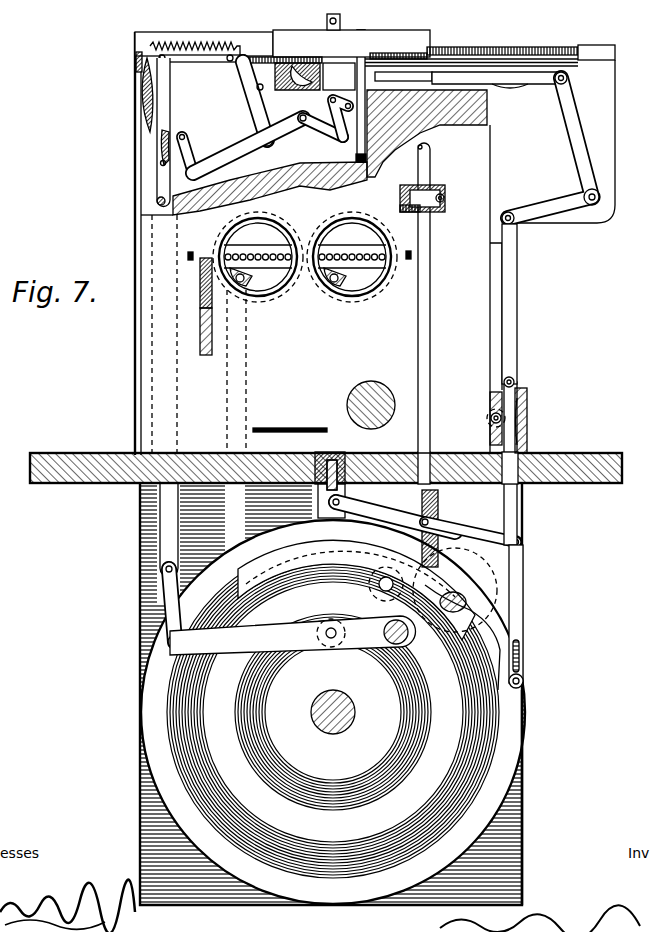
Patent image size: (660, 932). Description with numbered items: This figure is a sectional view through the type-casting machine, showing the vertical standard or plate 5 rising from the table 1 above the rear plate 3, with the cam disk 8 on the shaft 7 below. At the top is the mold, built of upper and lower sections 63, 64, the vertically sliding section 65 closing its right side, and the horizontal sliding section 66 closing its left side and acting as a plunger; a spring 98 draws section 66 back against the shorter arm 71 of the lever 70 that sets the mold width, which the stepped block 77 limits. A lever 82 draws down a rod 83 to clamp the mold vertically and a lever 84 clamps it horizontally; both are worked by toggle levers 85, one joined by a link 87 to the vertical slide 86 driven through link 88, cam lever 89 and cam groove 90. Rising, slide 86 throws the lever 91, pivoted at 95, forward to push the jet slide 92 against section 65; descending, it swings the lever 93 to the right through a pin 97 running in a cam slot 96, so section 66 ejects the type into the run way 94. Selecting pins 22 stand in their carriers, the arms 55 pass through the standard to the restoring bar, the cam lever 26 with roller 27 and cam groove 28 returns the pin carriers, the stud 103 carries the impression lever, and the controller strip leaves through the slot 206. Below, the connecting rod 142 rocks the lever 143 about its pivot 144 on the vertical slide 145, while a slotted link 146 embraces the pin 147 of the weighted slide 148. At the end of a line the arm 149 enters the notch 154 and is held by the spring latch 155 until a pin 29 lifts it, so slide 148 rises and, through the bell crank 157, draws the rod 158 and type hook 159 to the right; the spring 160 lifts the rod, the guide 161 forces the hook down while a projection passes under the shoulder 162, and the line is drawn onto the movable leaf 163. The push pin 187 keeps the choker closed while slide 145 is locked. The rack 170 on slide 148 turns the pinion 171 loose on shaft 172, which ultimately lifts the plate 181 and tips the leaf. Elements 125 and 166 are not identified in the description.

The table 1 is at (624, 468).
The rear plate 3 is at (526, 778).
The vertical standard or plate 5 is at (375, 243).
The shaft 7 is at (356, 710).
The cam disk 8 is at (155, 748).
The selecting pins 22 is at (255, 255).
The cam lever 26 is at (356, 590).
The roller 27 is at (393, 590).
The cam groove 28 is at (475, 720).
The pin 29 is at (438, 208).
The arms 55 is at (188, 256).
The upper mold section 63 is at (327, 22).
The lower mold section 64 is at (339, 76).
The vertically sliding mold section 65 is at (366, 52).
The horizontal sliding mold section 66 is at (293, 47).
The lever 70 is at (297, 86).
The shorter arm 71 is at (351, 43).
The block 77 is at (200, 335).
The lever 82 is at (336, 110).
The rod 83 is at (338, 14).
The lever 84 is at (258, 107).
The toggle levers 85 is at (285, 133).
The vertical slide 86 is at (160, 512).
The link 87 is at (200, 153).
The link 88 is at (166, 610).
The cam lever 89 is at (292, 635).
The cam groove 90 is at (242, 717).
The lever 91 is at (147, 95).
The jet slide 92 is at (134, 60).
The lever 93 is at (158, 118).
The run way 94 is at (426, 52).
The pivot 95 is at (157, 202).
The cam slot 96 is at (162, 148).
The pin 97 is at (161, 166).
The spring 98 is at (197, 43).
The stud 103 is at (376, 378).
The bracket 125 is at (266, 506).
The connecting rod 142 is at (318, 517).
The lever 143 is at (459, 528).
The pivot 144 is at (394, 528).
The vertical slide 145 is at (428, 338).
The link 146 is at (525, 608).
The pin 147 is at (524, 683).
The weighted slide 148 is at (519, 512).
The arm 149 is at (398, 198).
The notch 154 is at (410, 210).
The spring latch 155 is at (433, 185).
The bell crank 157 is at (571, 148).
The rod 158 is at (519, 72).
The type hook 159 is at (368, 78).
The spring 160 is at (506, 88).
The guide 161 is at (460, 86).
The shoulder 162 is at (359, 30).
The movable leaf 163 is at (572, 66).
The vertical rod 166 is at (515, 304).
The rack 170 is at (515, 440).
The pinion 171 is at (490, 418).
The shaft 172 is at (486, 410).
The plate 181 is at (479, 50).
The push pin 187 is at (432, 146).
The slot 206 is at (286, 428).